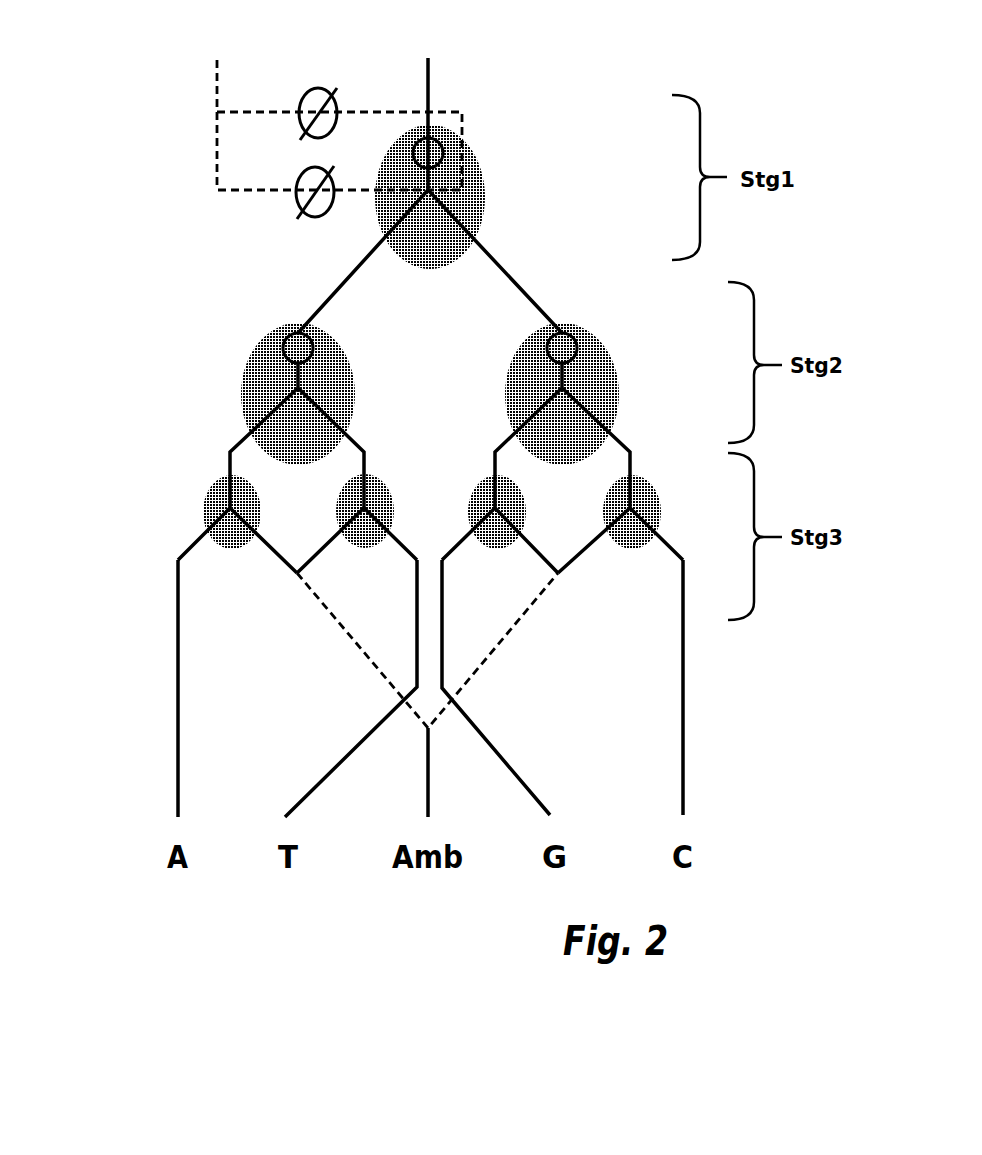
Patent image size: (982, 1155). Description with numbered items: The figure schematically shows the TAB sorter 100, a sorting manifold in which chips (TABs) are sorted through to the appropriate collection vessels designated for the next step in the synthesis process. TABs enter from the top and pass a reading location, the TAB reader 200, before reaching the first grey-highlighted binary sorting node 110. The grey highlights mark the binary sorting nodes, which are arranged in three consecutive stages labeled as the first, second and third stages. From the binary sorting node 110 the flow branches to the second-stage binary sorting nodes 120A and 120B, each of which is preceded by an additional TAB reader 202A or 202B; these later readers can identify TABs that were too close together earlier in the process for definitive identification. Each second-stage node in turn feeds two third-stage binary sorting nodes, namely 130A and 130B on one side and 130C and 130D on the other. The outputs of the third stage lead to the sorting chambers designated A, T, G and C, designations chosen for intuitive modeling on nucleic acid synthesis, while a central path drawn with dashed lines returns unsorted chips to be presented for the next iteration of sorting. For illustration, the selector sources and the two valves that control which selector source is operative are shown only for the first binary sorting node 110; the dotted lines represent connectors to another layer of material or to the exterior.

The TAB sorter 100 is at (162, 277).
The binary sorting node 110 is at (485, 198).
The TAB reader 200 is at (440, 143).
The TAB reader 202A is at (310, 334).
The TAB reader 202B is at (574, 335).
The binary sorting node 120A is at (355, 395).
The binary sorting node 120B is at (617, 395).
The binary sorting node 130A is at (203, 513).
The binary sorting node 130B is at (340, 510).
The binary sorting node 130C is at (478, 485).
The binary sorting node 130D is at (652, 488).